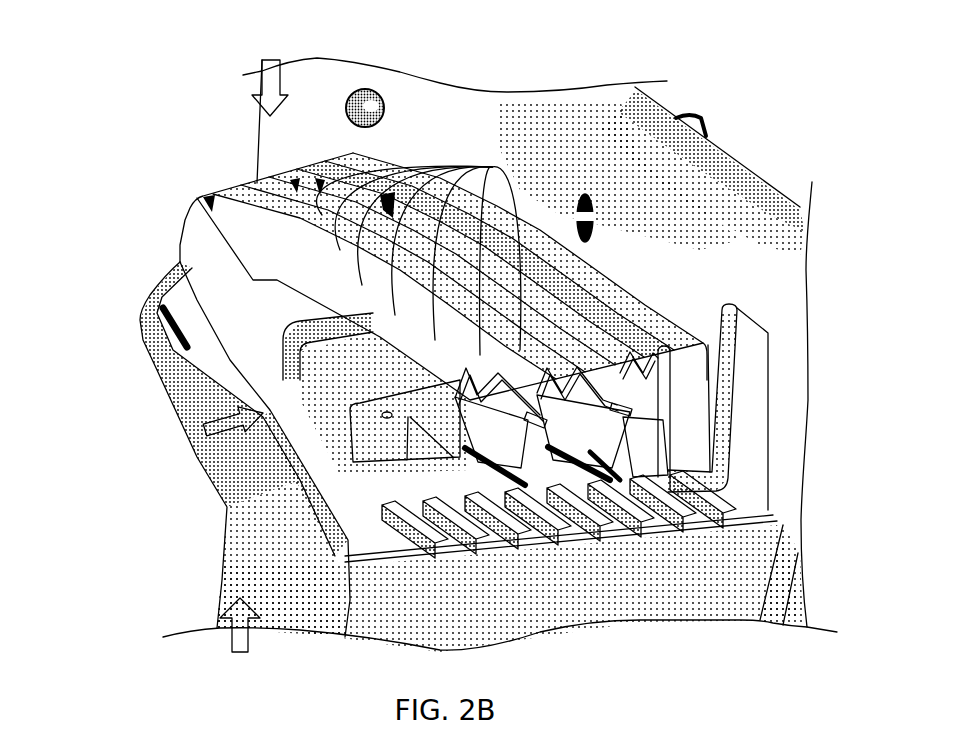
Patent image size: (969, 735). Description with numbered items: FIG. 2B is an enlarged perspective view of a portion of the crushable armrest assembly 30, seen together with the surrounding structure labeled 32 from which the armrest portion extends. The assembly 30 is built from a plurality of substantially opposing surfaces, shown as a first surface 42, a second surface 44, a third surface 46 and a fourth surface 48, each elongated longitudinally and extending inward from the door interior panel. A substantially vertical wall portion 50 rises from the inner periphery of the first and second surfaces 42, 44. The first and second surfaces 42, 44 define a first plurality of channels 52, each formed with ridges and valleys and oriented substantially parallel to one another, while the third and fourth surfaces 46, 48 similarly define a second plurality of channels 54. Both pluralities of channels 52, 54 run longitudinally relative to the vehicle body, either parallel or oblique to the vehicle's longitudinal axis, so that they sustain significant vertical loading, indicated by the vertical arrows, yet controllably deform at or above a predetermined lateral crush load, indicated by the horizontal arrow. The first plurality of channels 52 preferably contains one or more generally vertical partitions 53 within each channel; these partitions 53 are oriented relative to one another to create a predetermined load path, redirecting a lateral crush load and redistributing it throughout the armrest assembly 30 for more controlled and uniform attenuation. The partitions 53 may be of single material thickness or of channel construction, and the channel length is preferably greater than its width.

The crushable armrest assembly 30 is at (155, 175).
The housing body 32 is at (740, 183).
The first surface 42 is at (484, 386).
The second surface 44 is at (530, 412).
The third surface 46 is at (665, 470).
The fourth surface 48 is at (722, 504).
The vertical wall portion 50 is at (240, 463).
The first plurality of channels 52 is at (236, 163).
The vertical partitions 53 is at (419, 248).
The second plurality of channels 54 is at (740, 422).